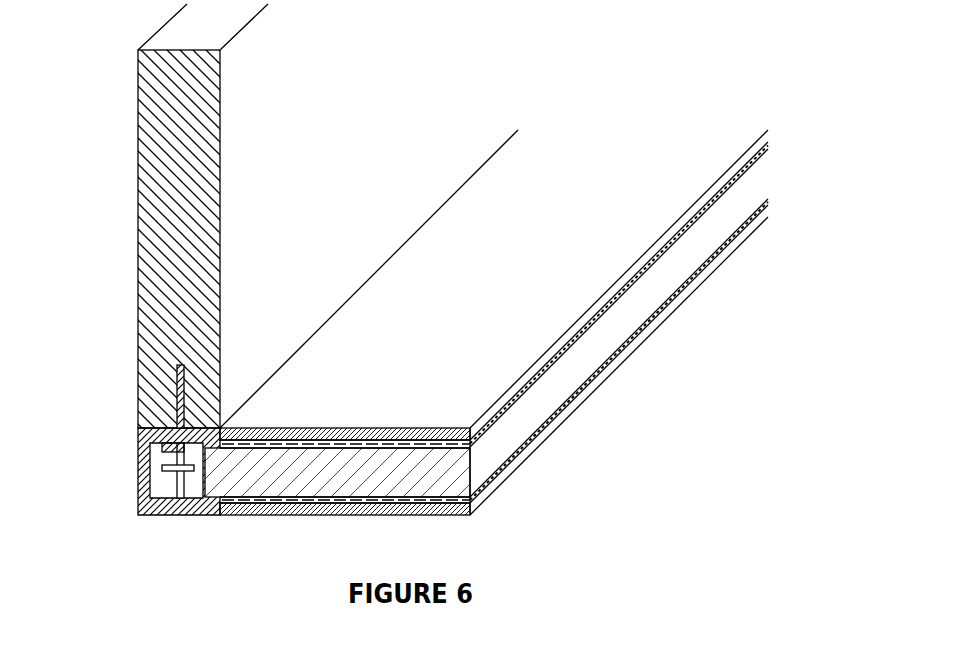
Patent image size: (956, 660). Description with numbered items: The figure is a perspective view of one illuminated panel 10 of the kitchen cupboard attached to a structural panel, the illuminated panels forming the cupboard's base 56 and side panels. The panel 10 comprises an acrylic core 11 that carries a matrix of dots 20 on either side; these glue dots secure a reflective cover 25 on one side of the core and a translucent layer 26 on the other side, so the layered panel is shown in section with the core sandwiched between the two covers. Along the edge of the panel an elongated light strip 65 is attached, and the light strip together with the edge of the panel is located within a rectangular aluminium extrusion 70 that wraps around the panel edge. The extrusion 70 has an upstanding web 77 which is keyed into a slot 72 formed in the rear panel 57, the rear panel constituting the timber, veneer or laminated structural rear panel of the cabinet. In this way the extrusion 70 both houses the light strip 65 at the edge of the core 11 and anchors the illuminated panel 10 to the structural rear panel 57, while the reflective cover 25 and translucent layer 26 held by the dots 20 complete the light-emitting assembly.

The illuminated panel 10 is at (493, 380).
The acrylic core 11 is at (422, 477).
The matrix of dots 20 is at (385, 445).
The reflective cover 25 is at (312, 430).
The translucent layer 26 is at (280, 510).
The base 56 is at (560, 322).
The rear panel 57 is at (153, 180).
The elongated light strip 65 is at (177, 468).
The rectangular aluminium extrusion 70 is at (140, 465).
The slot 72 is at (177, 362).
The upstanding web 77 is at (183, 392).